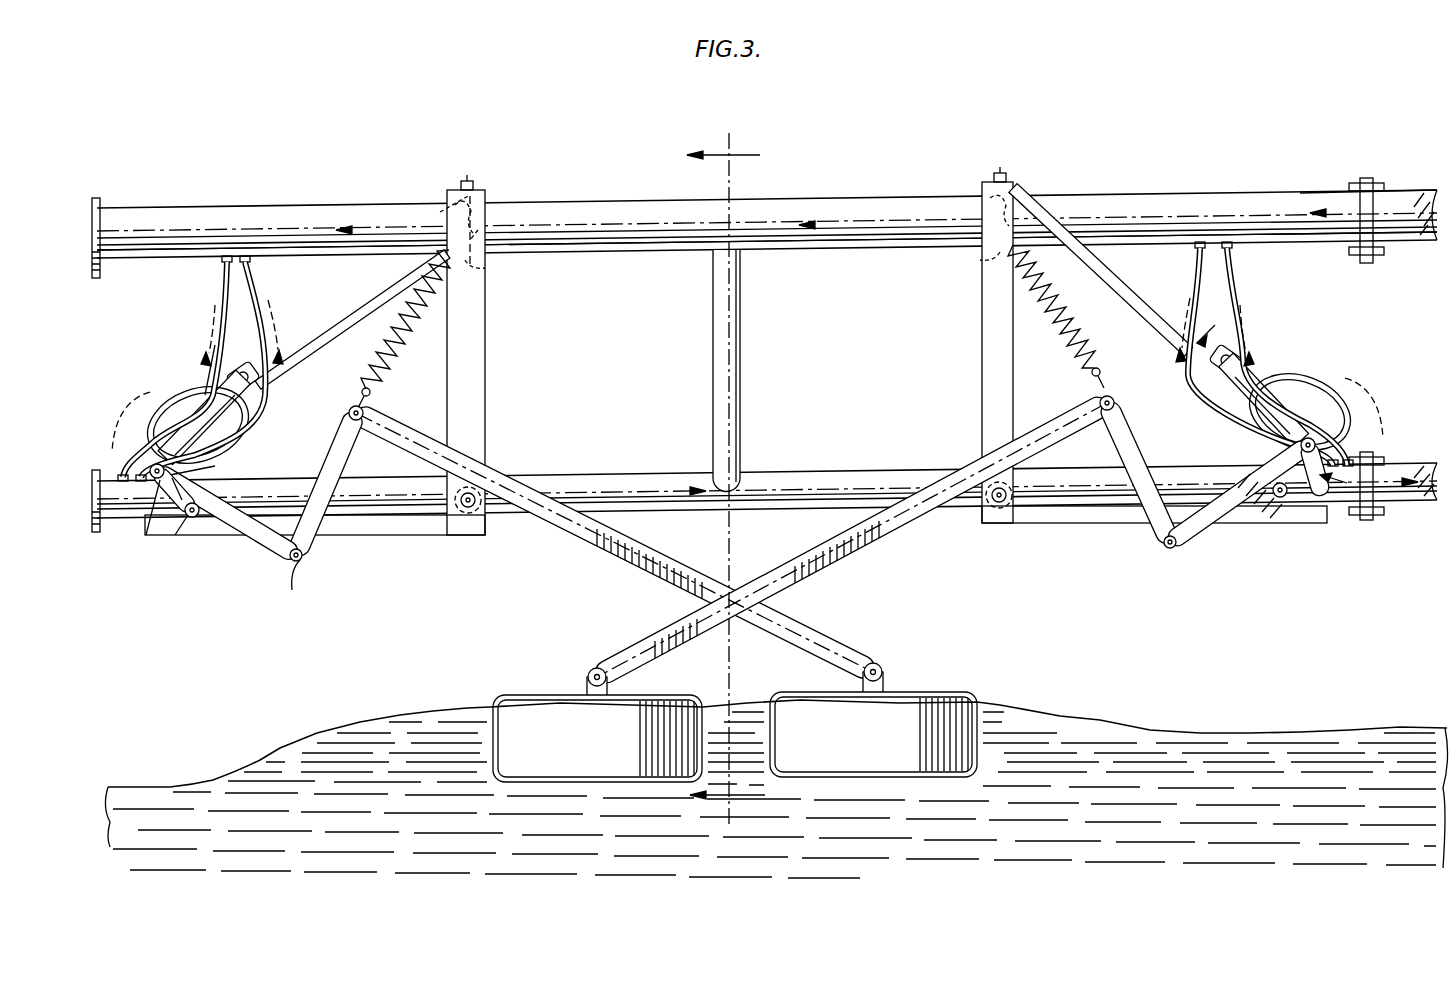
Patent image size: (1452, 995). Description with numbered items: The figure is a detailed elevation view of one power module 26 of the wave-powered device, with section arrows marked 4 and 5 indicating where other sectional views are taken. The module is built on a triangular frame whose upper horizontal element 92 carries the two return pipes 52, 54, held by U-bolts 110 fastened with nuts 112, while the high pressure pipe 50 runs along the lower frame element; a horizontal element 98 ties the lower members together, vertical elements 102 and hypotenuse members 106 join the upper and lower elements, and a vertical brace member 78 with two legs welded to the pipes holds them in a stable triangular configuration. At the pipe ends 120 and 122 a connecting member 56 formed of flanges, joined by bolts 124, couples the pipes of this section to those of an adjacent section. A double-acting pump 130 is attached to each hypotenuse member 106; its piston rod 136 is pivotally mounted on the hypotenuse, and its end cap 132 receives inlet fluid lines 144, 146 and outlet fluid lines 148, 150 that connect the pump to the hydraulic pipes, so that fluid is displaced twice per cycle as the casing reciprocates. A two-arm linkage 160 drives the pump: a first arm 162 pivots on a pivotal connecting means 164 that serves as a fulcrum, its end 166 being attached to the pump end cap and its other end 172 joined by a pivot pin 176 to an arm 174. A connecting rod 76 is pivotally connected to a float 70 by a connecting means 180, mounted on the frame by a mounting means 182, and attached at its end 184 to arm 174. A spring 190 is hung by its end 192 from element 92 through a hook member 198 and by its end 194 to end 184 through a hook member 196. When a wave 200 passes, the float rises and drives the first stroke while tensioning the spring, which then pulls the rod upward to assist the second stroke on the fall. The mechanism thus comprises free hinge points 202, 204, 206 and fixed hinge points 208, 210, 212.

The module 26 is at (838, 156).
The section line 4- 4 is at (726, 476).
The section line 5- 5 is at (1272, 398).
The high pressure pipe 50 is at (840, 478).
The return pipe 52 is at (868, 200).
The return pipe 54 is at (767, 241).
The connecting member 56 is at (1364, 180).
The float 70 is at (532, 696).
The connecting rod 76 is at (803, 630).
The vertical brace member 78 is at (730, 349).
The horizontal element 92 is at (453, 202).
The horizontal element 98 is at (380, 535).
The vertical element 102 is at (485, 360).
The hypotenuse member 106 is at (346, 316).
The U-bolt 110 is at (488, 268).
The nut 112 is at (473, 182).
The pipe end 120 is at (1337, 200).
The pipe end 122 is at (100, 212).
The bolt 124 is at (1374, 192).
The double-acting pump 130 is at (178, 408).
The end cap 132 is at (206, 394).
The piston rod 136 is at (1215, 383).
The inlet fluid line 144 is at (268, 328).
The inlet fluid line 146 is at (223, 288).
The outlet fluid line 148 is at (110, 454).
The outlet fluid line 150 is at (193, 388).
The two-arm linkage 160 is at (272, 562).
The first arm 162 is at (168, 535).
The pivotal connecting means 164 is at (231, 511).
The end of arm 166 is at (205, 474).
The other end of arm 172 is at (233, 498).
The arm 174 is at (328, 468).
The pivot pin 176 is at (307, 588).
The connecting means 180 is at (590, 668).
The mounting means 182 is at (455, 496).
The end of connecting rod 184 is at (371, 432).
The spring 190 is at (398, 332).
The spring end 192 is at (485, 222).
The spring end 194 is at (362, 388).
The hook member 196 is at (358, 400).
The hook member 198 is at (447, 206).
The wave 200 is at (1076, 730).
The free hinge point 202 is at (363, 412).
The free hinge point 204 is at (301, 559).
The free hinge point 206 is at (155, 480).
The fixed hinge point 208 is at (458, 512).
The fixed hinge point 210 is at (196, 518).
The fixed hinge point 212 is at (255, 428).